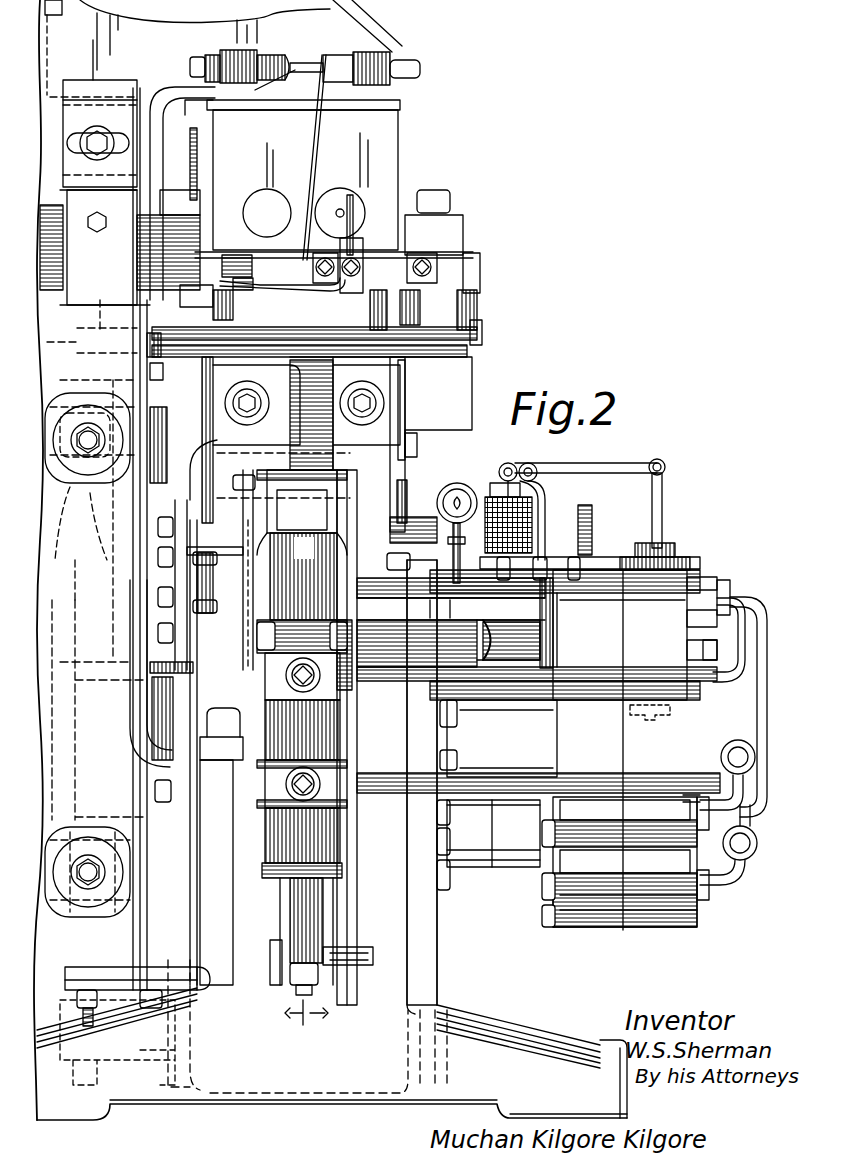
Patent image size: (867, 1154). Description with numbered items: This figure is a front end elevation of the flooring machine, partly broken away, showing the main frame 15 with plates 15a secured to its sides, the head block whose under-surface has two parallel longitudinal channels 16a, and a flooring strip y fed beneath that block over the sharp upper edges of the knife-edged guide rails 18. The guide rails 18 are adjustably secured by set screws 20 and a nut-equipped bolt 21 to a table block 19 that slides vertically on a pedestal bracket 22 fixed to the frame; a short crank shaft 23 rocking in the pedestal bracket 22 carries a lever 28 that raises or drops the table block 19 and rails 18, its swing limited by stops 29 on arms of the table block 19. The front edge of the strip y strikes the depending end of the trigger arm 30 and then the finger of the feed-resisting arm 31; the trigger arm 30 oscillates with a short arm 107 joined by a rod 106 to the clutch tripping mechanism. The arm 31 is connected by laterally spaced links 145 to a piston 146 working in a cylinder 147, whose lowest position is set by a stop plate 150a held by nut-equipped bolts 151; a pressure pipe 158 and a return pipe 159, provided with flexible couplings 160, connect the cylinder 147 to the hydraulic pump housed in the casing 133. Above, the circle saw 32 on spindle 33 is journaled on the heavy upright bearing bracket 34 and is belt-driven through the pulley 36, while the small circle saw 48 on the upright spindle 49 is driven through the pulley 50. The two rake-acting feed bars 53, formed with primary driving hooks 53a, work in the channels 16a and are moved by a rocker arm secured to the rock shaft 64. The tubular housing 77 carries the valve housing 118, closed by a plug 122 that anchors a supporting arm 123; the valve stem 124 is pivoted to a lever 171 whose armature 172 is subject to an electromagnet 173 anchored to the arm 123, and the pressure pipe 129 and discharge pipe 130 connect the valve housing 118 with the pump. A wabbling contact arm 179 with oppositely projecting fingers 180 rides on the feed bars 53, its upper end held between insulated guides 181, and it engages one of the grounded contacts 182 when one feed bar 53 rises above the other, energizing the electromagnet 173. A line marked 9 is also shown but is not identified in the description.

The spindle axis / vertical shaft 9 is at (401, 760).
The frame 15 is at (440, 385).
The plates 15a is at (480, 300).
The longitudinal channels 16a is at (420, 245).
The knife-edged guide rails 18 is at (205, 425).
The table block 19 is at (370, 430).
The set screws 20 is at (395, 575).
The nut-equipped bolt 21 is at (417, 445).
The pedestal bracket 22 is at (225, 720).
The crank shaft 23 is at (495, 665).
The lever 28 is at (465, 485).
The stops 29 is at (470, 556).
The trigger arm 30 is at (430, 283).
The feed-resisting arm 31 is at (315, 360).
The circle saw 32 is at (197, 185).
The spindle 33 is at (200, 235).
The upright bearing bracket 34 is at (155, 485).
The pulley 36 is at (63, 260).
The small circle saw 48 is at (147, 345).
The upright spindle 49 is at (150, 485).
The pulley 50 is at (160, 745).
The rake-acting feed bars 53 is at (345, 305).
The primary driving hooks 53a is at (460, 297).
The rock shaft 64 is at (500, 1022).
The tubular housing 77 is at (530, 690).
The rod 106 is at (340, 195).
The short arm 107 is at (365, 215).
The valve housing 118 is at (690, 565).
The plug 122 is at (660, 550).
The supporting arm 123 is at (600, 563).
The stem 124 is at (662, 500).
The pressure pipe 129 is at (737, 600).
The discharge pipe 130 is at (765, 620).
The pump casing 133 is at (540, 745).
The links 145 is at (262, 873).
The piston 146 is at (320, 925).
The cylinder 147 is at (315, 822).
The stop plate 150a is at (318, 983).
The nut-equipped bolts 151 is at (276, 972).
The pressure pipe 158 is at (612, 700).
The return pipe 159 is at (468, 775).
The flexible couplings 160 is at (720, 770).
The lever 171 is at (595, 470).
The armature 172 is at (515, 463).
The electromagnet 173 is at (532, 520).
The wabbling contact arm 179 is at (318, 155).
The fingers 180 is at (295, 285).
The insulated guides 181 is at (285, 57).
The grounded contacts 182 is at (290, 90).
The flooring strips y is at (482, 330).